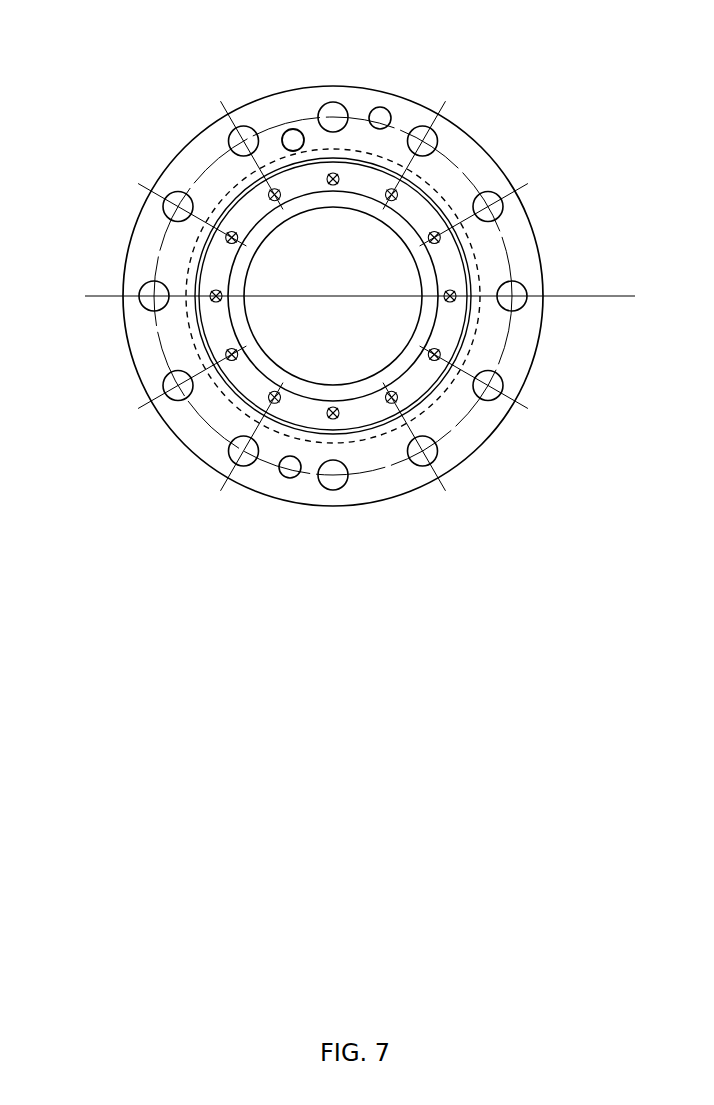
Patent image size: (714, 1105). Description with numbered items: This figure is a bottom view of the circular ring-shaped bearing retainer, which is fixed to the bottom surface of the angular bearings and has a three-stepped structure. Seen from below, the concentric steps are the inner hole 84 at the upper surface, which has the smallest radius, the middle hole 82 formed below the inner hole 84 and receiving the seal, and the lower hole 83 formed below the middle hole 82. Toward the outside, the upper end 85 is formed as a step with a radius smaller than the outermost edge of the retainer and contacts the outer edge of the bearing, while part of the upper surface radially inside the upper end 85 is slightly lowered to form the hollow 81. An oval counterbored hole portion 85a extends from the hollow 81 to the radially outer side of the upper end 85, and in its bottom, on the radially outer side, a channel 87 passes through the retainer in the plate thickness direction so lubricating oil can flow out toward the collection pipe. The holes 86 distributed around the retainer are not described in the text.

The hollow 81 is at (200, 436).
The middle hole 82 is at (245, 283).
The lower hole 83 is at (200, 334).
The inner hole 84 is at (266, 239).
The upper end 85 is at (186, 318).
The oval counterbored hole portion 85a is at (282, 133).
The bolt holes 86 is at (140, 282).
The channel 87 is at (293, 128).